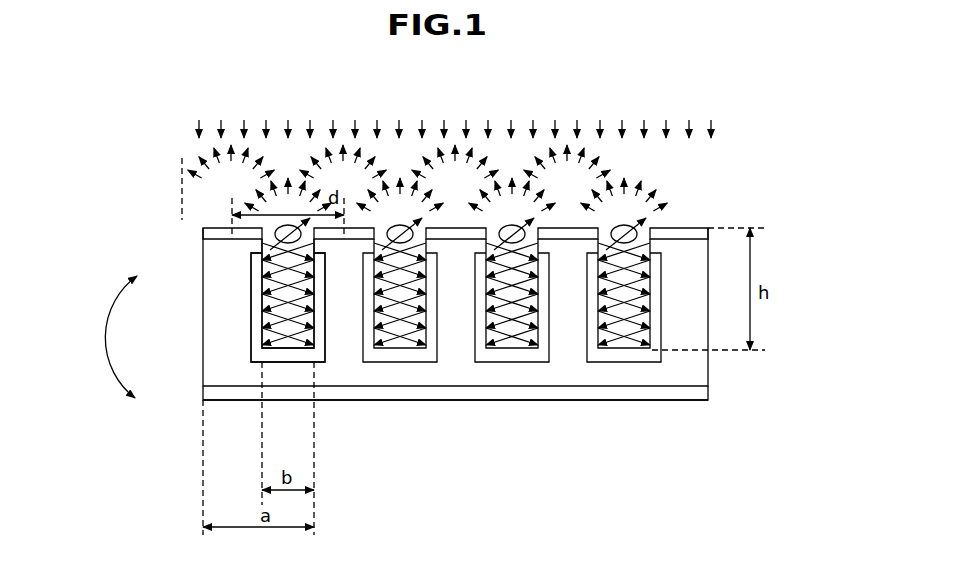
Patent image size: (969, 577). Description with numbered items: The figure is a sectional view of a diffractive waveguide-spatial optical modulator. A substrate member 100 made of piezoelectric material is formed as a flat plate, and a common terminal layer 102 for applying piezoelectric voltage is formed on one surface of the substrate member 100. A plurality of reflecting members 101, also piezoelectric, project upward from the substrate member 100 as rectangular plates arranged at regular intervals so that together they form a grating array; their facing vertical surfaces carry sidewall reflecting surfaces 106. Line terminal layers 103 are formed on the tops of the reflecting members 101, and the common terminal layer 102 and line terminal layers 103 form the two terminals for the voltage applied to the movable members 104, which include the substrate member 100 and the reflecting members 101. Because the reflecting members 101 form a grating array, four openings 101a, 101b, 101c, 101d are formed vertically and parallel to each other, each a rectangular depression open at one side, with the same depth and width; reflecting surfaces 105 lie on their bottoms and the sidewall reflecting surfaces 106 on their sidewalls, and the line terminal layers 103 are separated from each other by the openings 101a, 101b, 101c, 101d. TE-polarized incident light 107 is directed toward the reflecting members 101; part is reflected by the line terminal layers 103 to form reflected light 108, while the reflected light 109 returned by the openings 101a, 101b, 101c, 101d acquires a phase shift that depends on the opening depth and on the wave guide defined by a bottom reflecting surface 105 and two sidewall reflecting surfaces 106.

The substrate member 100 is at (182, 397).
The reflecting members 101 is at (182, 259).
The opening 101a is at (290, 233).
The opening 101b is at (403, 233).
The opening 101c is at (512, 233).
The opening 101d is at (629, 233).
The common terminal layer 102 is at (182, 431).
The line terminal layers 103 is at (182, 222).
The movable members 104 is at (100, 337).
The reflecting surfaces 105 is at (182, 369).
The sidewall reflecting surfaces 106 is at (182, 299).
The incident light 107 is at (660, 113).
The reflected light 108 is at (182, 139).
The reflected light 109 is at (182, 98).